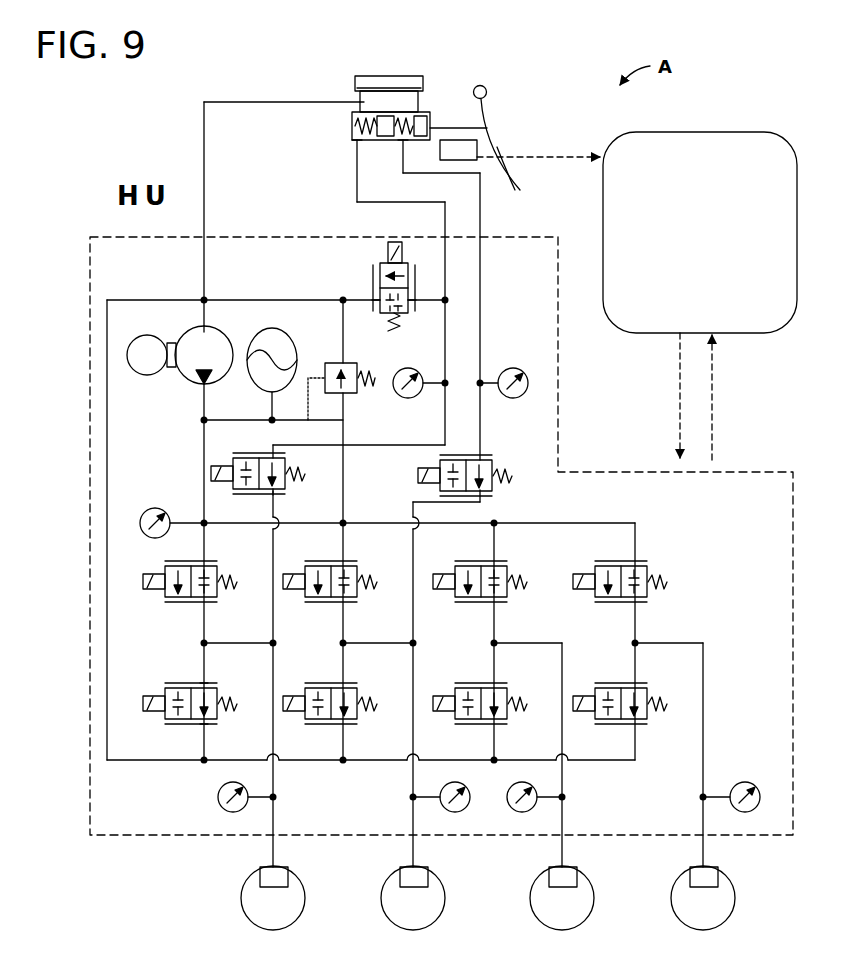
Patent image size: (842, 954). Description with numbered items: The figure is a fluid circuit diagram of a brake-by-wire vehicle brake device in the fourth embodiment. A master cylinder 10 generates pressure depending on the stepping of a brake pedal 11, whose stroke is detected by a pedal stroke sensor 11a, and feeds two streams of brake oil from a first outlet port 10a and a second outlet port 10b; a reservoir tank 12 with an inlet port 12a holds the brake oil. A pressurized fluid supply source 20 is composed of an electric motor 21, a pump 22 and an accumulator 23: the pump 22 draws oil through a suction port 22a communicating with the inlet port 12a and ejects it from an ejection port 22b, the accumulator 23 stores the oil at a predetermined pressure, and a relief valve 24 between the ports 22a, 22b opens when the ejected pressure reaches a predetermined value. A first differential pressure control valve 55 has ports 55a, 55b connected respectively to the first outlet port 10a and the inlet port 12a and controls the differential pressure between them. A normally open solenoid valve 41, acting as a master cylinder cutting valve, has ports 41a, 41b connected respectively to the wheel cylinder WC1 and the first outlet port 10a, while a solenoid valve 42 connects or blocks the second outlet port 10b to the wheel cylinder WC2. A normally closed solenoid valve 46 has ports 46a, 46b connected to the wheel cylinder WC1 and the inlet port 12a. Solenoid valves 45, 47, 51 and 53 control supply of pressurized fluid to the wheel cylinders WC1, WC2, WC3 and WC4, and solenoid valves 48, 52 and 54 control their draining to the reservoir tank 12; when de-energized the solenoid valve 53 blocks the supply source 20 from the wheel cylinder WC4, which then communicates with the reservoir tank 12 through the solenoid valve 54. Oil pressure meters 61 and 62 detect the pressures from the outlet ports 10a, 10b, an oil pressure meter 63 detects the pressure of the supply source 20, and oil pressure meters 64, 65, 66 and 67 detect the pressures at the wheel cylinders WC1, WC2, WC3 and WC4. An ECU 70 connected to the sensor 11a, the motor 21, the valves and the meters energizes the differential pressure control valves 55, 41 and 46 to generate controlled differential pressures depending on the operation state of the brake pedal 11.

The master cylinder 10 is at (352, 128).
The first outlet port 10a is at (353, 142).
The second outlet port 10b is at (399, 142).
The brake pedal 11 is at (490, 136).
The pedal stroke sensor 11a is at (462, 162).
The reservoir tank 12 is at (384, 76).
The inlet port 12a is at (360, 102).
The pressurized fluid supply source 20 is at (159, 385).
The electric motor 21 is at (127, 356).
The pump 22 is at (196, 322).
The suction port 22a is at (212, 322).
The ejection port 22b is at (203, 386).
The accumulator 23 is at (284, 332).
The relief valve 24 is at (350, 363).
The solenoid valve 41 is at (304, 473).
The port 41a is at (277, 495).
The port 41b is at (272, 453).
The solenoid valve 42 is at (486, 492).
The solenoid valve 45 is at (208, 565).
The solenoid valve 46 is at (212, 684).
The port 46a is at (202, 684).
The port 46b is at (203, 726).
The solenoid valve 47 is at (350, 563).
The solenoid valve 48 is at (328, 684).
The solenoid valve 51 is at (497, 565).
The solenoid valve 52 is at (475, 684).
The solenoid valve 53 is at (638, 566).
The solenoid valve 54 is at (615, 684).
The first differential pressure control valve 55 is at (373, 276).
The port 55a is at (416, 298).
The port 55b is at (372, 297).
The oil pressure meter 61 is at (407, 399).
The oil pressure meter 62 is at (513, 399).
The oil pressure meter 63 is at (155, 507).
The oil pressure meter 64 is at (216, 798).
The oil pressure meter 65 is at (462, 786).
The oil pressure meter 66 is at (518, 811).
The oil pressure meter 67 is at (742, 782).
The ECU 70 is at (720, 132).
The wheel cylinder WC1 is at (262, 868).
The wheel cylinder WC2 is at (402, 868).
The wheel cylinder WC3 is at (552, 868).
The wheel cylinder WC4 is at (692, 868).